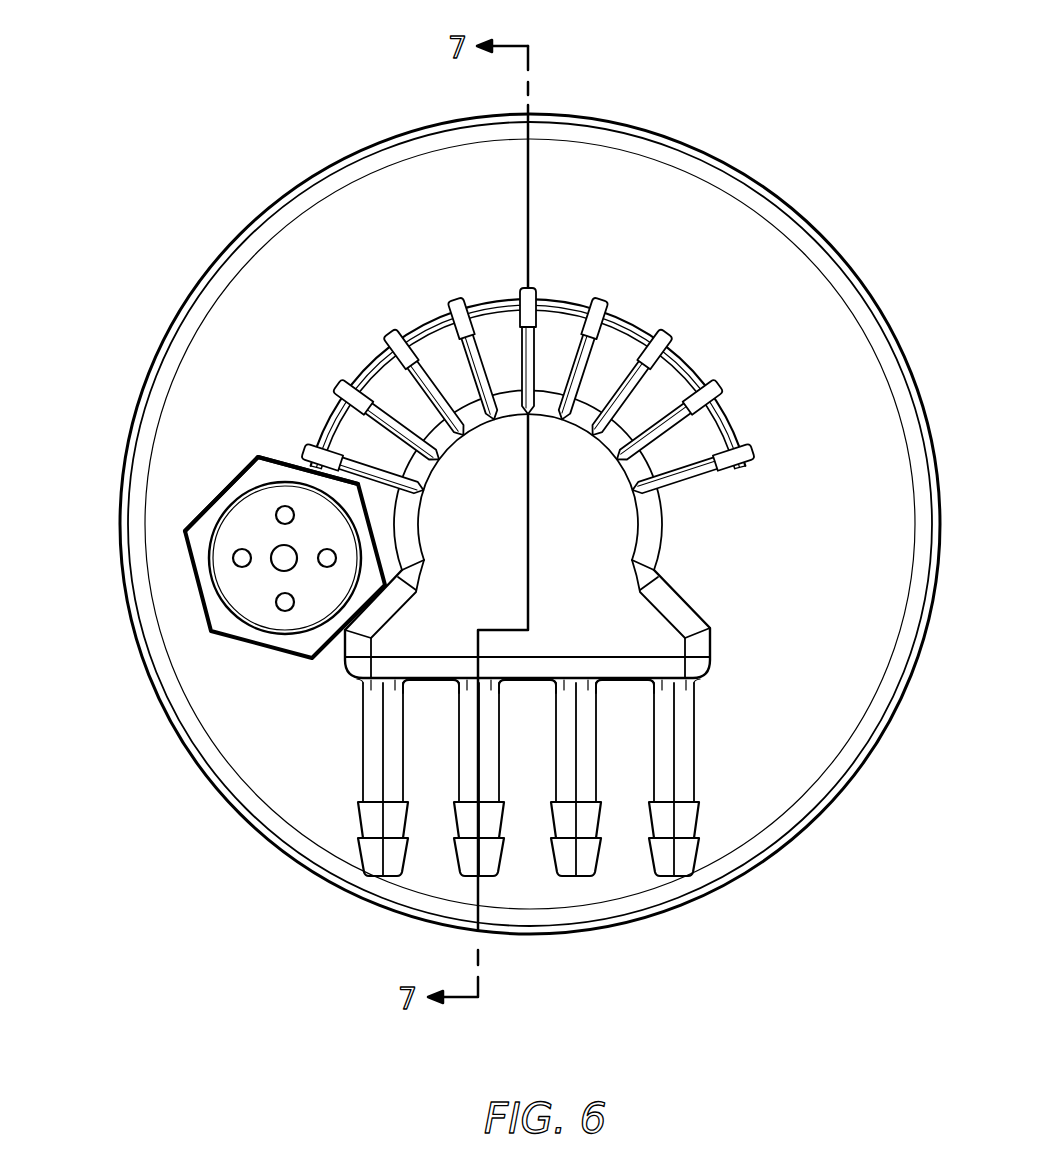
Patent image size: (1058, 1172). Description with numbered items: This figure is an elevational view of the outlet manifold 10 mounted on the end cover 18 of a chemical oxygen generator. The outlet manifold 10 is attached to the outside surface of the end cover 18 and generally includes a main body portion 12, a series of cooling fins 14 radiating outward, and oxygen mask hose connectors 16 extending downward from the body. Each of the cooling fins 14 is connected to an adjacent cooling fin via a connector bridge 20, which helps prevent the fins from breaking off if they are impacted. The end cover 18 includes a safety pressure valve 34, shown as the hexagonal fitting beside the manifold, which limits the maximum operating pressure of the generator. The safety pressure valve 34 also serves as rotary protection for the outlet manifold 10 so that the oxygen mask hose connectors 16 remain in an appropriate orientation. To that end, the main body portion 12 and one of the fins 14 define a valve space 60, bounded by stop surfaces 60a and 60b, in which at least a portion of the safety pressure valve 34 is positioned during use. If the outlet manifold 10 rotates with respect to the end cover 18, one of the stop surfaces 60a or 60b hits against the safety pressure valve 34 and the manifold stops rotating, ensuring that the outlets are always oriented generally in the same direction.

The outlet manifold 10 is at (700, 223).
The main body portion 12 is at (575, 507).
The cooling fins 14 is at (598, 305).
The oxygen mask hose connectors 16 is at (683, 778).
The end cover 18 is at (829, 637).
The connector bridge 20 is at (690, 365).
The safety pressure valve 34 is at (247, 523).
The valve space 60 is at (383, 508).
The stop surface 60a is at (315, 467).
The stop surface 60b is at (352, 613).